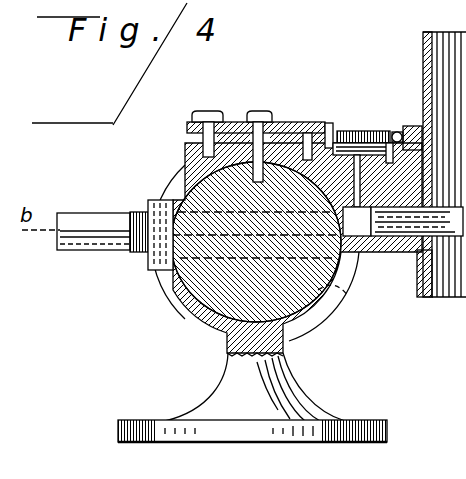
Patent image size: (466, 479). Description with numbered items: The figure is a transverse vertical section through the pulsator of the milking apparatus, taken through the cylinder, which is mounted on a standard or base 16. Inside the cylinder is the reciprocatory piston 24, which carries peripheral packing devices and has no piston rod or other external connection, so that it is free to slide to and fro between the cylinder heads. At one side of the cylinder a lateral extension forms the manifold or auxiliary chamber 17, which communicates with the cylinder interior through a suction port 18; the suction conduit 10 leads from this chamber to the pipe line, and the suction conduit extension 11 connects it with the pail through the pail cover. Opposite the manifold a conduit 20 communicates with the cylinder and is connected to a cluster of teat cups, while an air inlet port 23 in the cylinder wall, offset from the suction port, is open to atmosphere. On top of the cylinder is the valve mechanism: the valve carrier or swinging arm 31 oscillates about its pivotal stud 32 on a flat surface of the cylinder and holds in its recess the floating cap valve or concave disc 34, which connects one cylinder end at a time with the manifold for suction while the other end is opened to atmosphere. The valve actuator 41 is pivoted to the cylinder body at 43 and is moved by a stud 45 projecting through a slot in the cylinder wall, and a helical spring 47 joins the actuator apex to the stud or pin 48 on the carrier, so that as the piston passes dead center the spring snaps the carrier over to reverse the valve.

The suction conduit 10 is at (430, 55).
The suction conduit extension 11 is at (453, 282).
The standard or base 16 is at (220, 378).
The manifold or auxiliary chamber 17 is at (402, 253).
The suction port 18 is at (363, 253).
The conduit 20 is at (98, 250).
The air inlet port 23 is at (350, 297).
The reciprocatory piston 24 is at (172, 300).
The valve carrier or swinging arm 31 is at (376, 135).
The pivotal stud 32 is at (396, 131).
The floating cap valve or concave disc 34 is at (330, 124).
The valve actuator 41 is at (297, 122).
The actuator pivot 43 is at (308, 132).
The stud 45 is at (268, 106).
The helical spring 47 is at (345, 112).
The stud or pin 48 is at (349, 130).